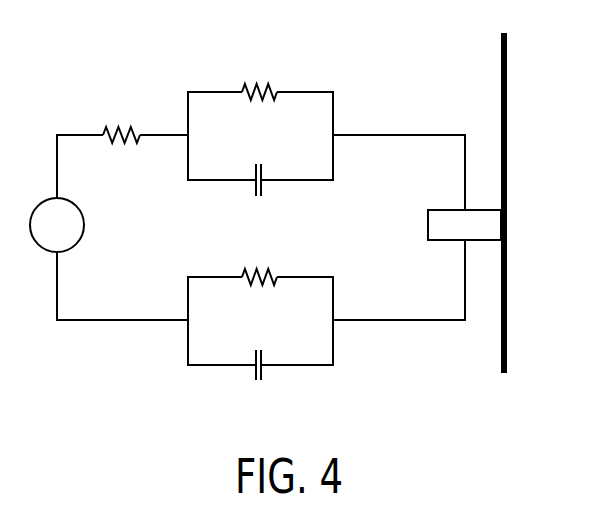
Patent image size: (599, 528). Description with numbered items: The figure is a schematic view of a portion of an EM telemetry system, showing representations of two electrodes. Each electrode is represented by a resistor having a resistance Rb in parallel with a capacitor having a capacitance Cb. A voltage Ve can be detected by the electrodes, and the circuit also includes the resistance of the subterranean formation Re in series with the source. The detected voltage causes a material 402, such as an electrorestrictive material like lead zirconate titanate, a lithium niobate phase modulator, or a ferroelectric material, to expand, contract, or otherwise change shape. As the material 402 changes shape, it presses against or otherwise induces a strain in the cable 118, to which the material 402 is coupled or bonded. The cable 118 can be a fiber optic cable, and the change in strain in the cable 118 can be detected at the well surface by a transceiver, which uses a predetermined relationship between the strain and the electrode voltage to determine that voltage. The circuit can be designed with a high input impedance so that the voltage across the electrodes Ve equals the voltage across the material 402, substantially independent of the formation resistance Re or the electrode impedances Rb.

The cable 118 is at (507, 75).
The material 402 is at (428, 222).
The voltage Ve is at (57, 225).
The resistance of the subterranean formation Re is at (121, 121).
The resistance Rb is at (259, 168).
The capacitance Cb is at (258, 273).